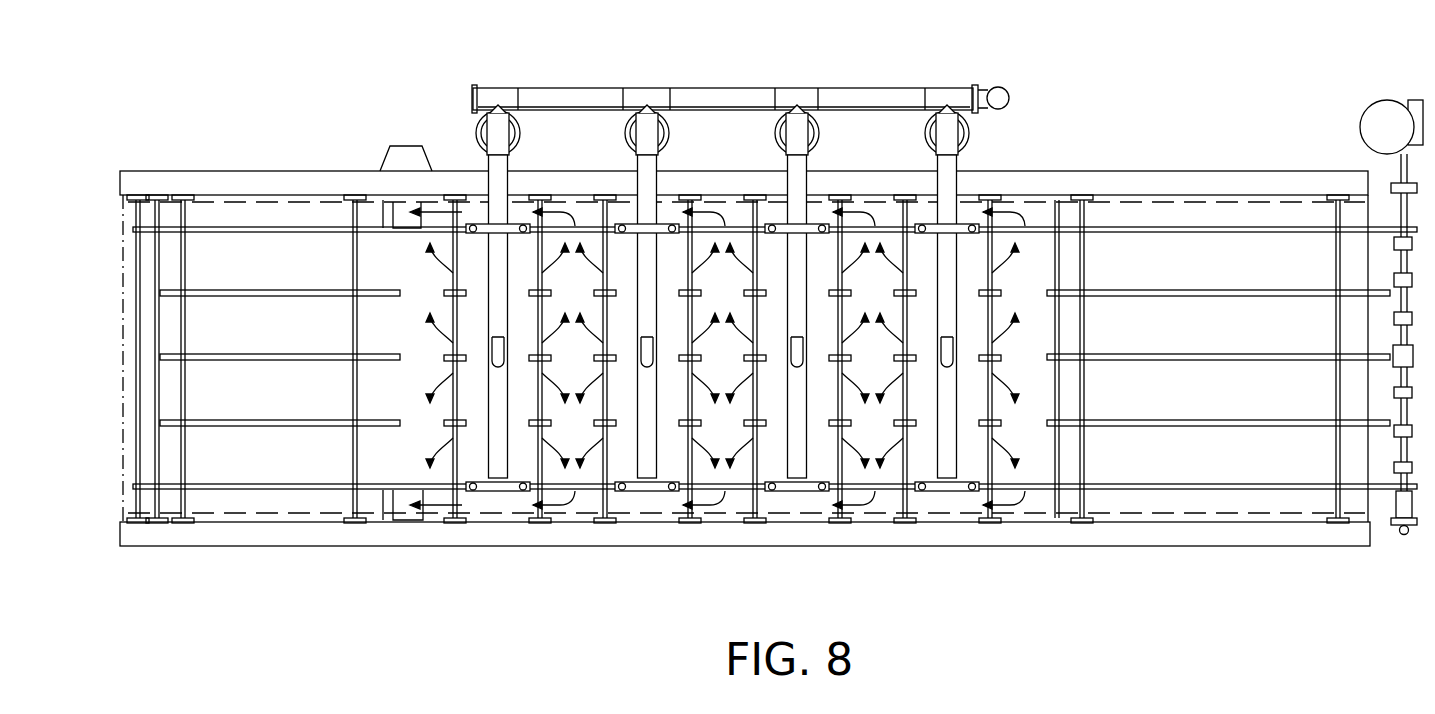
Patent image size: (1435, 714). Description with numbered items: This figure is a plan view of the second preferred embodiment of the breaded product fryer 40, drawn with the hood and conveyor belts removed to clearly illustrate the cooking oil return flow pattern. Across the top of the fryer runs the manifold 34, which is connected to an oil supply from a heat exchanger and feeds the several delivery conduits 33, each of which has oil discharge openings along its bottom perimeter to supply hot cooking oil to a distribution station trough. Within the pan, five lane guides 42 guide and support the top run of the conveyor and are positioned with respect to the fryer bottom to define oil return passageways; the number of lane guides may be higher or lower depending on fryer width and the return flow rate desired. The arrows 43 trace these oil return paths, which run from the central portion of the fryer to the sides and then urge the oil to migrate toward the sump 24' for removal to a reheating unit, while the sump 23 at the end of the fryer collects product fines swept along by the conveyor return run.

The sump 23 is at (1385, 101).
The sump 24' is at (422, 411).
The delivery conduit 33 is at (495, 183).
The manifold 34 is at (880, 87).
The second preferred embodiment of the invention 40 is at (1106, 154).
The lane guides 42 is at (238, 290).
The arrows 43 is at (575, 240).